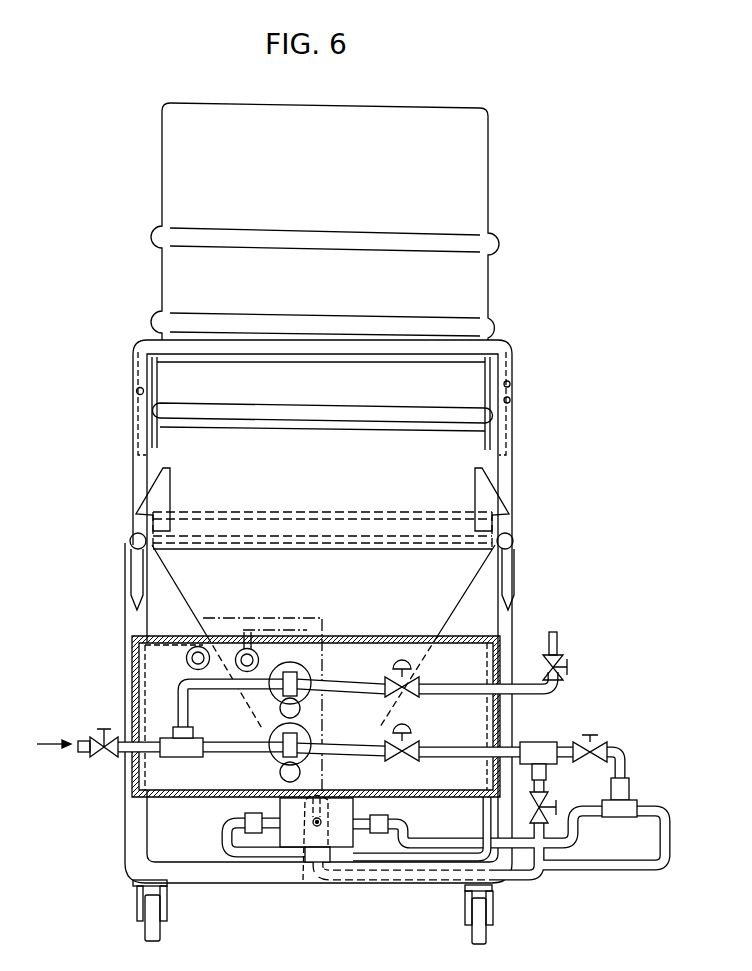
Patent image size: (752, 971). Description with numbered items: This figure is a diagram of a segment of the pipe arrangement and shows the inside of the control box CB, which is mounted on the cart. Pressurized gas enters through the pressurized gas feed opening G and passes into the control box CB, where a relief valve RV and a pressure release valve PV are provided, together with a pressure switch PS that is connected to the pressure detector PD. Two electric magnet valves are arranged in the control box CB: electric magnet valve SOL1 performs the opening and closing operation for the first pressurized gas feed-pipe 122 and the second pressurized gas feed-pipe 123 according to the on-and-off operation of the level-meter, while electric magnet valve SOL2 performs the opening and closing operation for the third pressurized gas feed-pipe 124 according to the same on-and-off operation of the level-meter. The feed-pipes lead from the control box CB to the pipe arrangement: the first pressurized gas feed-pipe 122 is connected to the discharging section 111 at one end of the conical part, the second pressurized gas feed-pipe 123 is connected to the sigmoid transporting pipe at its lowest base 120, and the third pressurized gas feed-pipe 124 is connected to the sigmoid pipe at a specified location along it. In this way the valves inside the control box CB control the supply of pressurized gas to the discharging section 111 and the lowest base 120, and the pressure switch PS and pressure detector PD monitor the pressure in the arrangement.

The control box CB is at (132, 652).
The pressure detector PD is at (297, 623).
The relief valve RV is at (189, 666).
The pressure switch PS is at (242, 671).
The pressure release valve PV is at (308, 737).
The pressurized gas feed opening G is at (85, 753).
The electric magnet valve SOL1 is at (406, 730).
The electric magnet valve SOL2 is at (412, 664).
The third pressurized gas feed-pipe 124 is at (557, 638).
The second pressurized gas feed-pipe 123 is at (527, 878).
The first pressurized gas feed-pipe 122 is at (575, 840).
The lowest base 120 is at (303, 880).
The discharging section 111 is at (348, 843).